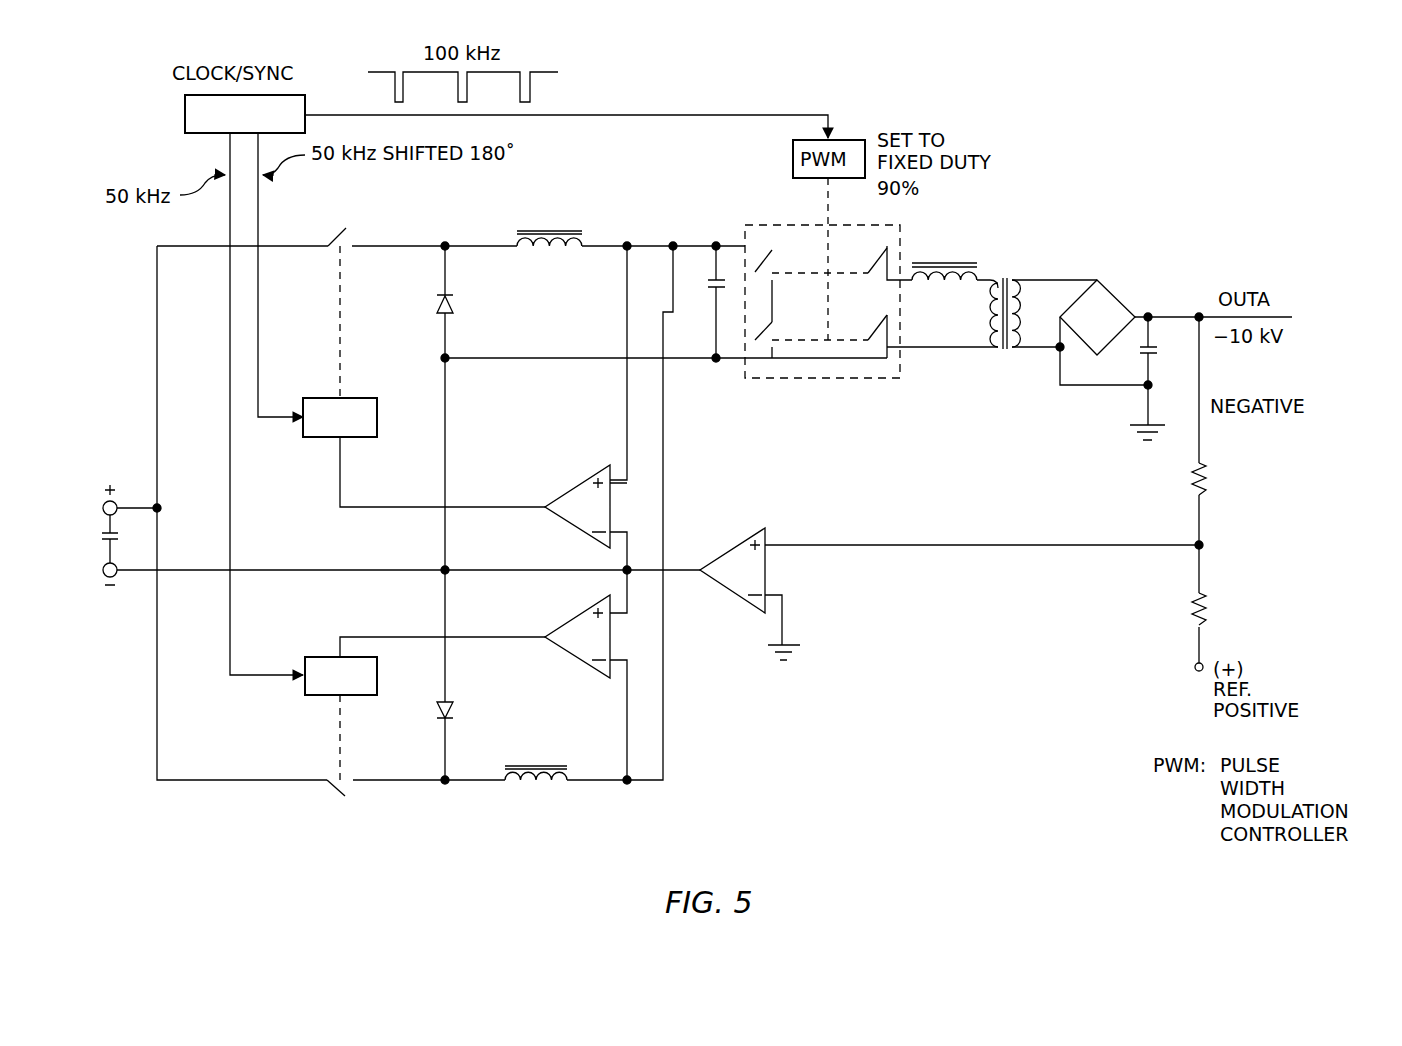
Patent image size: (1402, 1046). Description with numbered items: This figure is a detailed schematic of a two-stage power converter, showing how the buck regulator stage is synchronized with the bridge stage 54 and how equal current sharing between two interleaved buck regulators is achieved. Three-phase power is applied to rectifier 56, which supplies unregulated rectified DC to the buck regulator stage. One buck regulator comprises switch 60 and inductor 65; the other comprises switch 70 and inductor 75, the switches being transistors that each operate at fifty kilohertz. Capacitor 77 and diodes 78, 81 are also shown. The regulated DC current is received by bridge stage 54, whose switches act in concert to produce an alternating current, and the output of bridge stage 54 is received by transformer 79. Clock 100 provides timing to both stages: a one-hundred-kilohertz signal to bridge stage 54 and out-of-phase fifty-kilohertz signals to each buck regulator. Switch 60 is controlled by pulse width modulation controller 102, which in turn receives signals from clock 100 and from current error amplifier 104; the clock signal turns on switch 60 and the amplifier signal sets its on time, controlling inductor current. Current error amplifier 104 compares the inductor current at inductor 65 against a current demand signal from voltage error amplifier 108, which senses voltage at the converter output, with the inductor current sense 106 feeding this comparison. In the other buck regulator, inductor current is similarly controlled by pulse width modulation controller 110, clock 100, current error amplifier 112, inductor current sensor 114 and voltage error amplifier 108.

The clock 100 is at (185, 112).
The switch 60 is at (350, 215).
The switch 70 is at (342, 818).
The inductor 65 is at (550, 231).
The inductor 75 is at (530, 783).
The diode 81 is at (455, 305).
The diode 78 is at (437, 707).
The capacitor 77 is at (707, 283).
The bridge stage 54 is at (870, 380).
The transformer 79 is at (1004, 276).
The rectifier 56 is at (110, 478).
The pulse width modulation controller 102 is at (320, 398).
The pulse width modulation controller 110 is at (318, 657).
The current error amplifier 104 is at (560, 520).
The current error amplifier 112 is at (560, 622).
The voltage error amplifier 108 is at (732, 590).
The inductor current sense 106 is at (640, 270).
The inductor current sensor 114 is at (636, 718).